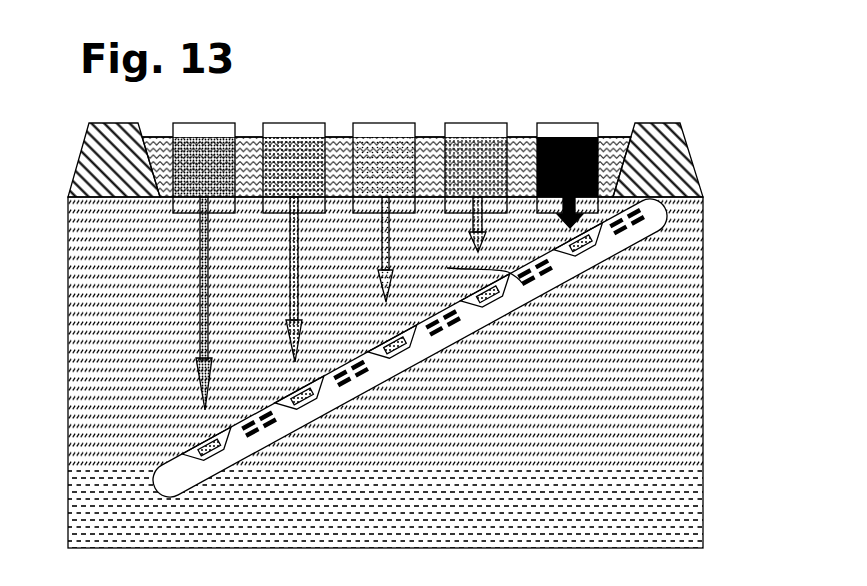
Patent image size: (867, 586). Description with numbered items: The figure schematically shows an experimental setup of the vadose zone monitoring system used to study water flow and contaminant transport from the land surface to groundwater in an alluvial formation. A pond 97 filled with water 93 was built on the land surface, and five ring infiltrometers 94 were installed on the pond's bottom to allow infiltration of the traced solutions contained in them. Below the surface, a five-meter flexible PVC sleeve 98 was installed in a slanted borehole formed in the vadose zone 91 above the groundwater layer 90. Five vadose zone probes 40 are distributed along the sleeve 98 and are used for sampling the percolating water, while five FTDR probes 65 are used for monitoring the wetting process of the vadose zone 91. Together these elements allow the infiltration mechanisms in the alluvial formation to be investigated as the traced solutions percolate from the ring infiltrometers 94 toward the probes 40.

The vadose zone probe 40 is at (370, 352).
The FTDR probe 65 is at (443, 316).
The groundwater layer 90 is at (72, 526).
The vadose zone 91 is at (70, 373).
The water 93 is at (611, 137).
The ring infiltrometer 94 is at (557, 122).
The pond 97 is at (540, 75).
The flexible PVC sleeve 98 is at (568, 279).